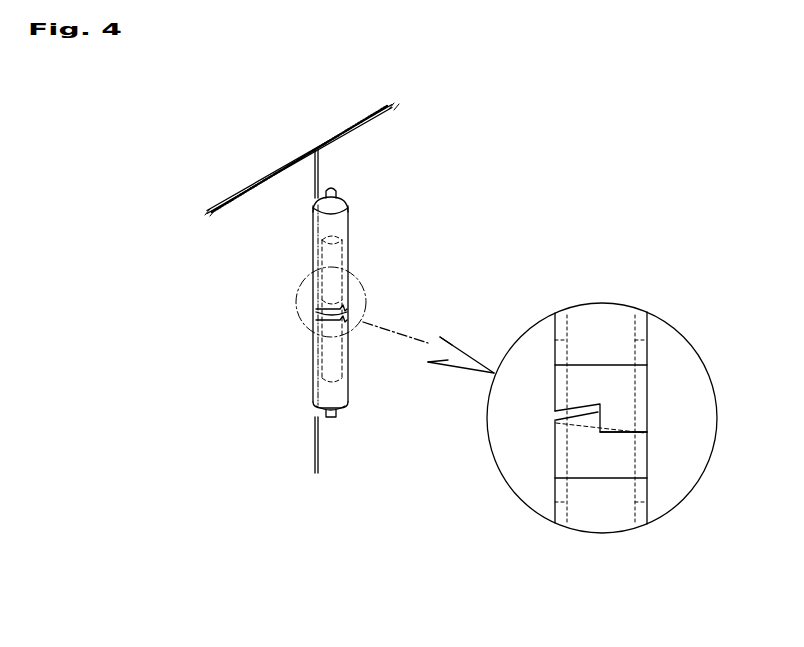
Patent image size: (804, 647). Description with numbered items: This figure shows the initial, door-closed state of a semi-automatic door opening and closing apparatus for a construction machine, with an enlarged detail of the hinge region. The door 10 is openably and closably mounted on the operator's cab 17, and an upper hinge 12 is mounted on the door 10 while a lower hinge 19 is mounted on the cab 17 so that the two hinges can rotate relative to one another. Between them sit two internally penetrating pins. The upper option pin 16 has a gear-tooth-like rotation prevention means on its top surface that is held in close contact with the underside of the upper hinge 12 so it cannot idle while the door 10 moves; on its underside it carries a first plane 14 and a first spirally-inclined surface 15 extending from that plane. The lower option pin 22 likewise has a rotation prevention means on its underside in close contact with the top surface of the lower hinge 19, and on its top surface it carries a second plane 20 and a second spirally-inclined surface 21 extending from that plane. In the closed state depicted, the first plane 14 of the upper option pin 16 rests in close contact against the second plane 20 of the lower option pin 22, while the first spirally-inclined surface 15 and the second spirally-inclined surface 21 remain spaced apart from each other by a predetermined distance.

The door 10 is at (272, 180).
The operator's cab 17 is at (352, 132).
The upper hinge 12 is at (615, 331).
The first plane 14 is at (634, 438).
The first spirally-inclined surface 15 is at (555, 397).
The upper option pin 16 is at (623, 388).
The lower hinge 19 is at (617, 512).
The second plane 20 is at (633, 433).
The second spirally-inclined surface 21 is at (590, 415).
The lower option pin 22 is at (628, 469).